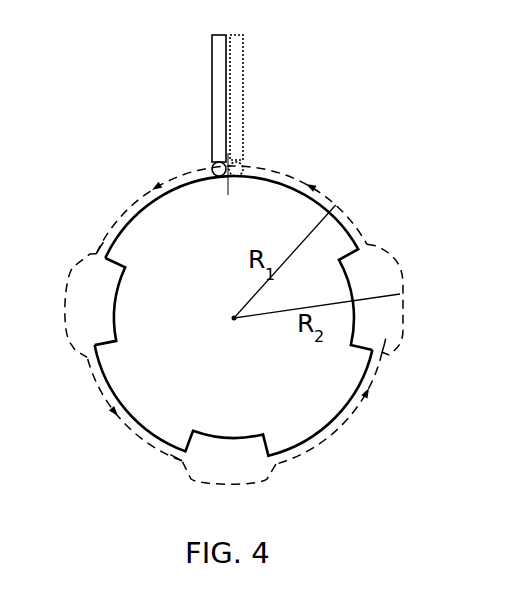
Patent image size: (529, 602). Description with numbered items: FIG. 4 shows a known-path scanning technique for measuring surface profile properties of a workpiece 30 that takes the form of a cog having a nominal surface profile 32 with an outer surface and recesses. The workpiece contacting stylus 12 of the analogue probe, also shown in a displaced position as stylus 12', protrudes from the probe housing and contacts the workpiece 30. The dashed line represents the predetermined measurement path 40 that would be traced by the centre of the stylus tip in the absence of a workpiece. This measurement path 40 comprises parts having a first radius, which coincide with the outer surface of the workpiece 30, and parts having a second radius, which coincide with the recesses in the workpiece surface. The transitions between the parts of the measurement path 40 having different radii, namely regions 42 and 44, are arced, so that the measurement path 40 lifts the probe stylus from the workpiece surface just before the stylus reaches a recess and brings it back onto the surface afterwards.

The workpiece contacting stylus 12 is at (192, 99).
The stylus 12' is at (268, 99).
The workpiece 30 is at (251, 388).
The nominal surface profile 32 is at (116, 320).
The predetermined measurement path 40 is at (328, 197).
The transition region 42 is at (90, 253).
The transition region 44 is at (72, 352).